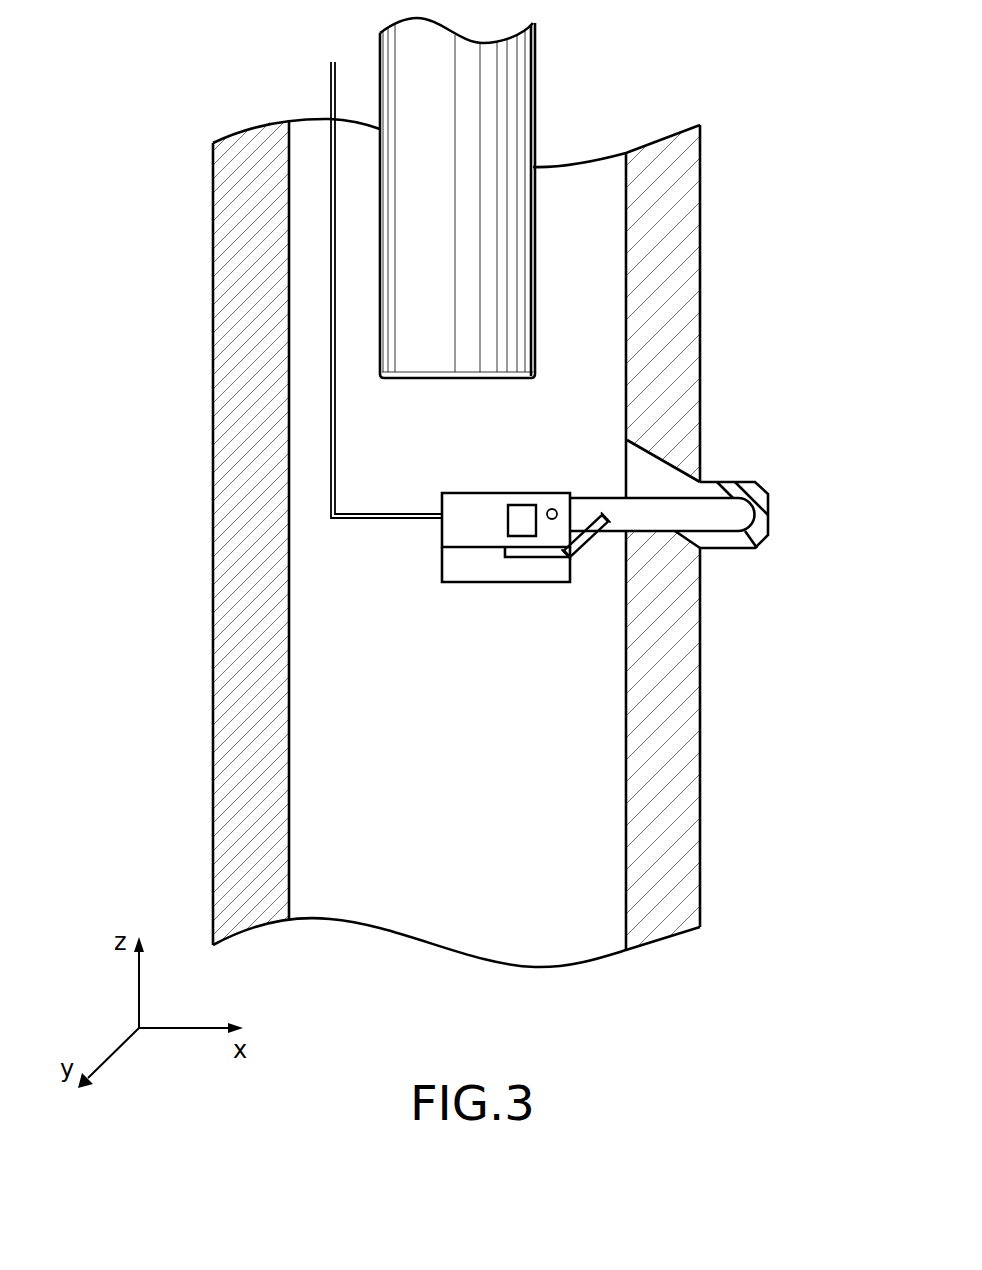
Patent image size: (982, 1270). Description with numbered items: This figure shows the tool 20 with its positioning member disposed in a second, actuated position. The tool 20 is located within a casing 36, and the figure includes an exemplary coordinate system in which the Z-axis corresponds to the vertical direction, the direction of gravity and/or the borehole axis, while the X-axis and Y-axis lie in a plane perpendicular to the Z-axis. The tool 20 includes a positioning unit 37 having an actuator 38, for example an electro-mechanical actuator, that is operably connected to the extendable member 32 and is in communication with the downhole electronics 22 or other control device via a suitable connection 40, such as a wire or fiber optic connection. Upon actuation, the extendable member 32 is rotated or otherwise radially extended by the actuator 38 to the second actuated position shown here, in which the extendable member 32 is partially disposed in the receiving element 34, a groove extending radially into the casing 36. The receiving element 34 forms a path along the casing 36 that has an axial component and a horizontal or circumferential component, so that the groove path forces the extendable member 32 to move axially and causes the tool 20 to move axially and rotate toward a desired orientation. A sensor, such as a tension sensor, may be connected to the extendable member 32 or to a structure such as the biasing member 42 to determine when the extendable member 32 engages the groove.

The tool 20 is at (262, 510).
The downhole electronics 22 is at (510, 108).
The extendable member 32 is at (730, 506).
The receiving element 34 is at (752, 550).
The casing 36 is at (673, 273).
The positioning unit 37 is at (512, 600).
The actuator 38 is at (455, 507).
The connection 40 is at (365, 519).
The biasing member 42 is at (520, 510).